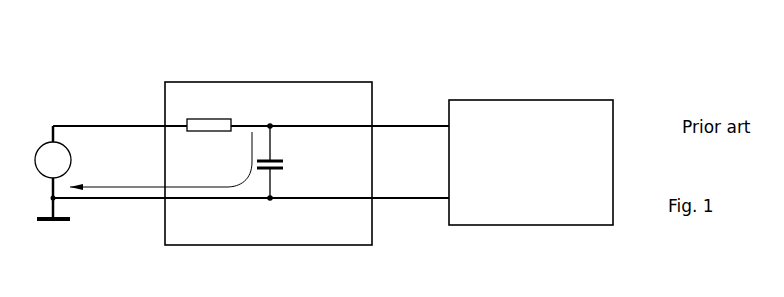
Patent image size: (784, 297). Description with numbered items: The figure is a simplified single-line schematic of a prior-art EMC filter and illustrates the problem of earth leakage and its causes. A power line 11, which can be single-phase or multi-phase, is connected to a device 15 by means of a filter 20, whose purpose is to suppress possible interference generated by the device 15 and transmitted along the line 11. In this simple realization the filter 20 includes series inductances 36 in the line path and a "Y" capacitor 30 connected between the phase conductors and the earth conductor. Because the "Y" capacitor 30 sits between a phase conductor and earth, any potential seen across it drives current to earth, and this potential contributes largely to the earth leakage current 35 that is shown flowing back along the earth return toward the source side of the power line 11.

The power line 11 is at (88, 123).
The series inductances 36 is at (200, 119).
The "Y" capacitor 30 is at (277, 158).
The filter 20 is at (268, 163).
The device 15 is at (531, 162).
The earth leakage current 35 is at (153, 188).